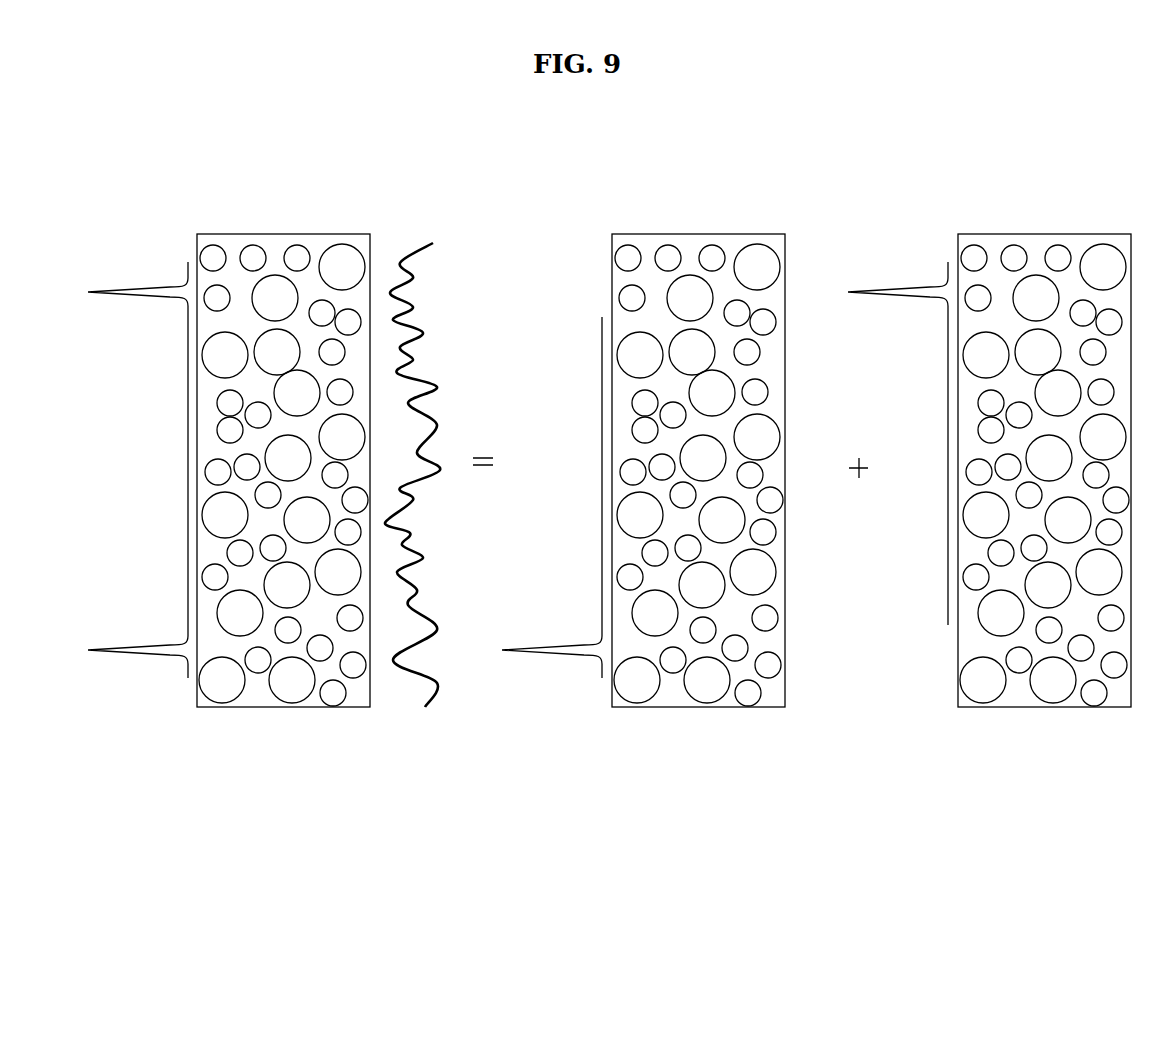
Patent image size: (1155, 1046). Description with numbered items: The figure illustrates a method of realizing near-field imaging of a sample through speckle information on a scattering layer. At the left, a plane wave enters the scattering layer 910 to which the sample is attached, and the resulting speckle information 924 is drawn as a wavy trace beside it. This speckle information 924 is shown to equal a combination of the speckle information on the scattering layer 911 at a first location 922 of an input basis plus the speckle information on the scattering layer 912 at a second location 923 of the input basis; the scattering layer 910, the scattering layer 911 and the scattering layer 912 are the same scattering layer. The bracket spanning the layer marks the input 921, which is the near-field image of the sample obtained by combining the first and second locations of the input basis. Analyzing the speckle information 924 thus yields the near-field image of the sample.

The scattering layer 910 is at (283, 234).
The scattering layer 911 is at (697, 234).
The scattering layer 912 is at (1043, 234).
The input 921 is at (133, 285).
The first location of the input basis 922 is at (552, 658).
The second location of the input basis 923 is at (898, 283).
The speckle information 924 is at (433, 243).